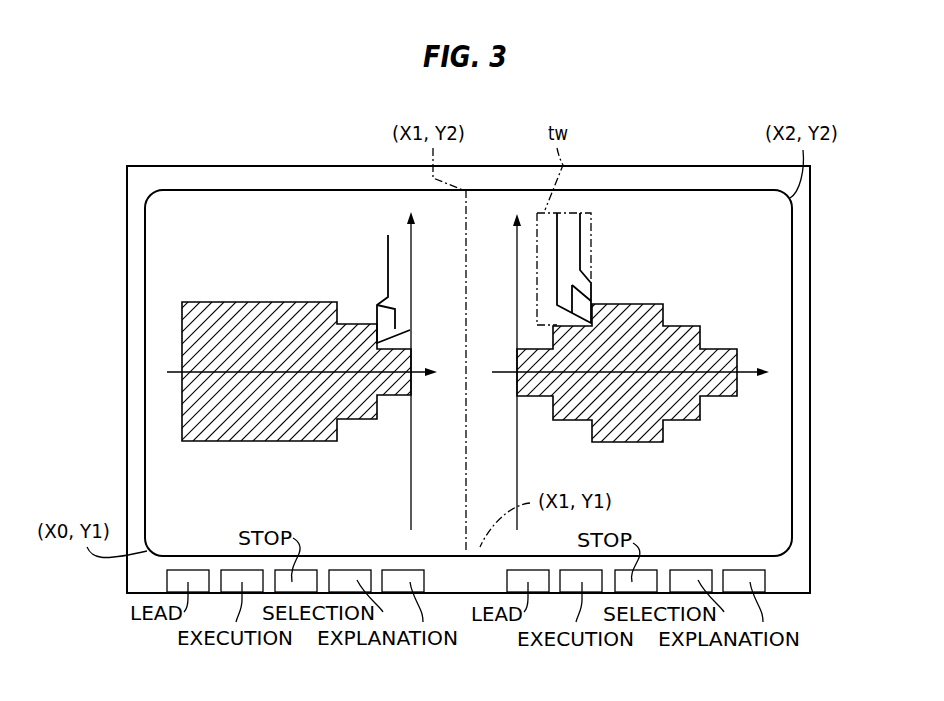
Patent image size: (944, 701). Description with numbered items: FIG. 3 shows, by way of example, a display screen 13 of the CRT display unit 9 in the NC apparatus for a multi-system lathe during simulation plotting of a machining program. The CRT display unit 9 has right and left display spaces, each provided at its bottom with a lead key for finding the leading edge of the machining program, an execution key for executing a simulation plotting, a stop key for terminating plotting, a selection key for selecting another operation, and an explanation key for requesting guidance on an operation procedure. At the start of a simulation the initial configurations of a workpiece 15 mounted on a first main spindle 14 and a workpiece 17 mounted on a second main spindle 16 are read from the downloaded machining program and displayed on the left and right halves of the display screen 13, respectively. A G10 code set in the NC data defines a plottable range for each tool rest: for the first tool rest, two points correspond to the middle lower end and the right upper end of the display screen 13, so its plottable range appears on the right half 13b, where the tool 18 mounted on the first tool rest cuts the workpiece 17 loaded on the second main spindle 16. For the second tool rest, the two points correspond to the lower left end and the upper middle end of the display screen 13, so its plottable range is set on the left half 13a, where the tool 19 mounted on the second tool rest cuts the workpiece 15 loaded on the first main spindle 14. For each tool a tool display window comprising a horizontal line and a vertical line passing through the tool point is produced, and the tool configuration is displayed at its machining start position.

The CRT display unit 9 is at (826, 227).
The display screen 13 is at (498, 210).
The left half of the display screen 13a is at (258, 207).
The right half of the display screen 13b is at (642, 207).
The first main spindle 14 is at (170, 375).
The workpiece 15 is at (272, 420).
The second main spindle 16 is at (750, 378).
The workpiece 17 is at (633, 428).
The tool 18 is at (553, 258).
The tool 19 is at (402, 280).